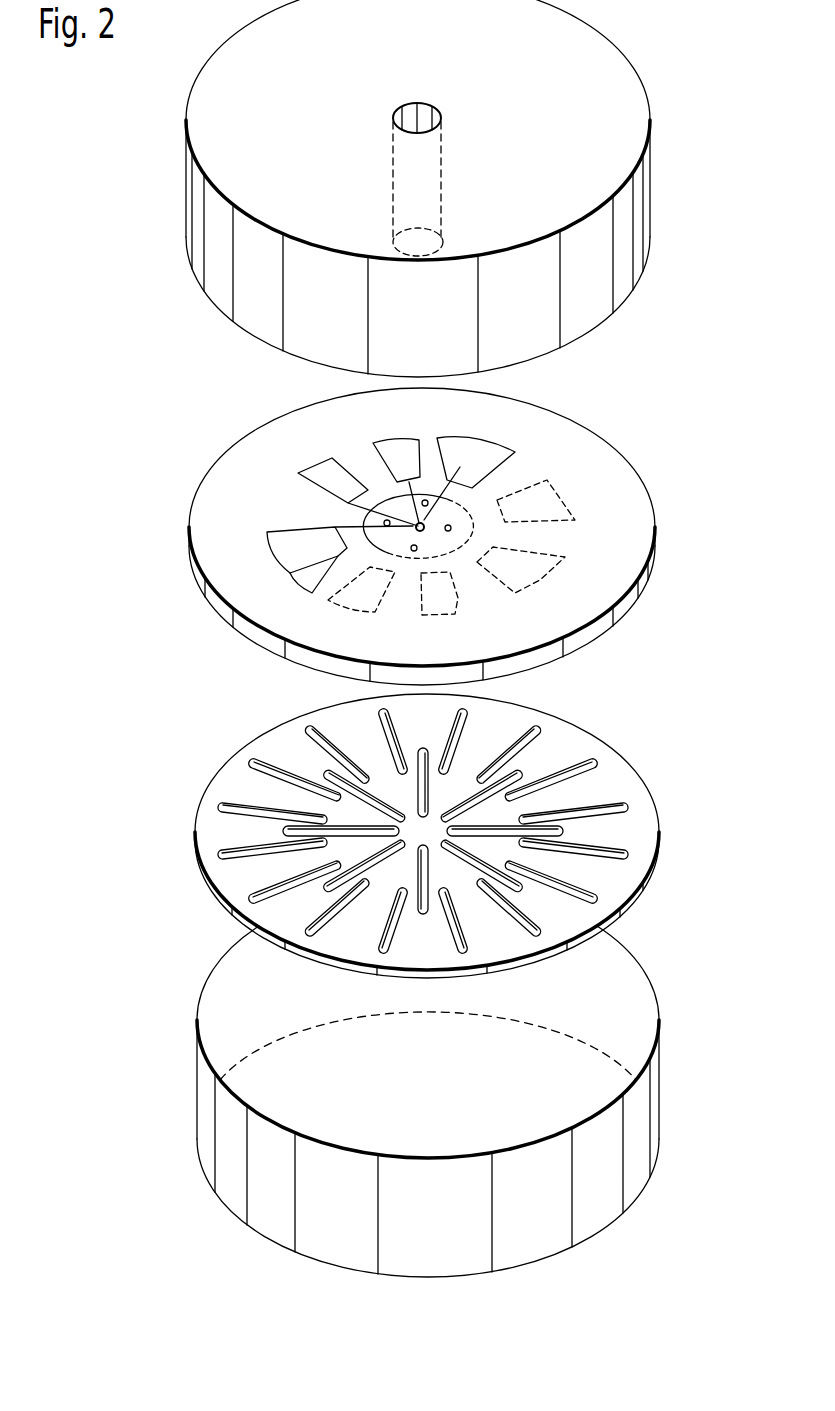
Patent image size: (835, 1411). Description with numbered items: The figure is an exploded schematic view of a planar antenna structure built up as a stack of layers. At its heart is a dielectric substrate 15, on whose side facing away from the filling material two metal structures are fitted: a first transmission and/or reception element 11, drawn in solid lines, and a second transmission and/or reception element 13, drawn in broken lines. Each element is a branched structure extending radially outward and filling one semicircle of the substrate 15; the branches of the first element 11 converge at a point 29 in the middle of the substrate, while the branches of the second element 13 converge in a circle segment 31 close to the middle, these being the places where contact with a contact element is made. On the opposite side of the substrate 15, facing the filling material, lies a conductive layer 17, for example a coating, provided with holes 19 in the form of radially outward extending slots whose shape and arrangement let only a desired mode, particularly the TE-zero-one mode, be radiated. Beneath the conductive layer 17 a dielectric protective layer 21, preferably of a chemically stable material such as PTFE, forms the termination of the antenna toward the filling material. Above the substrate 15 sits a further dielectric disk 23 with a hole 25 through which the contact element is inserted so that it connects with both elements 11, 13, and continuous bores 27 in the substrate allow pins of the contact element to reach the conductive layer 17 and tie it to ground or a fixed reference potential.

The first transmission and/or reception element 11 is at (383, 460).
The second transmission and/or reception element 13 is at (565, 558).
The dielectric substrate 15 is at (605, 525).
The conductive layer 17 is at (645, 842).
The holes 19 is at (610, 798).
The protective layer 21 is at (655, 1085).
The dielectric disk 23 is at (633, 230).
The hole 25 is at (440, 112).
The continuous bores 27 is at (452, 529).
The point 29 is at (418, 528).
The circle segment 31 is at (430, 533).